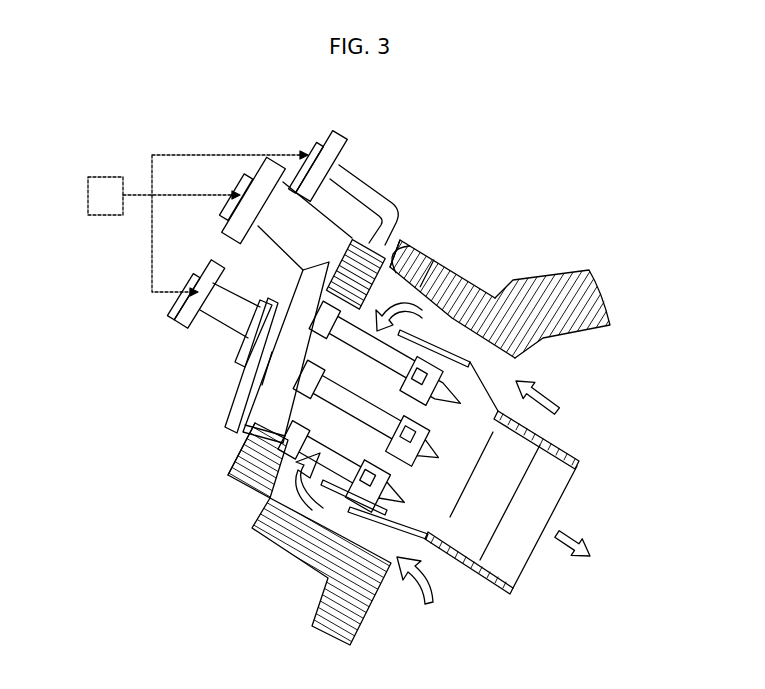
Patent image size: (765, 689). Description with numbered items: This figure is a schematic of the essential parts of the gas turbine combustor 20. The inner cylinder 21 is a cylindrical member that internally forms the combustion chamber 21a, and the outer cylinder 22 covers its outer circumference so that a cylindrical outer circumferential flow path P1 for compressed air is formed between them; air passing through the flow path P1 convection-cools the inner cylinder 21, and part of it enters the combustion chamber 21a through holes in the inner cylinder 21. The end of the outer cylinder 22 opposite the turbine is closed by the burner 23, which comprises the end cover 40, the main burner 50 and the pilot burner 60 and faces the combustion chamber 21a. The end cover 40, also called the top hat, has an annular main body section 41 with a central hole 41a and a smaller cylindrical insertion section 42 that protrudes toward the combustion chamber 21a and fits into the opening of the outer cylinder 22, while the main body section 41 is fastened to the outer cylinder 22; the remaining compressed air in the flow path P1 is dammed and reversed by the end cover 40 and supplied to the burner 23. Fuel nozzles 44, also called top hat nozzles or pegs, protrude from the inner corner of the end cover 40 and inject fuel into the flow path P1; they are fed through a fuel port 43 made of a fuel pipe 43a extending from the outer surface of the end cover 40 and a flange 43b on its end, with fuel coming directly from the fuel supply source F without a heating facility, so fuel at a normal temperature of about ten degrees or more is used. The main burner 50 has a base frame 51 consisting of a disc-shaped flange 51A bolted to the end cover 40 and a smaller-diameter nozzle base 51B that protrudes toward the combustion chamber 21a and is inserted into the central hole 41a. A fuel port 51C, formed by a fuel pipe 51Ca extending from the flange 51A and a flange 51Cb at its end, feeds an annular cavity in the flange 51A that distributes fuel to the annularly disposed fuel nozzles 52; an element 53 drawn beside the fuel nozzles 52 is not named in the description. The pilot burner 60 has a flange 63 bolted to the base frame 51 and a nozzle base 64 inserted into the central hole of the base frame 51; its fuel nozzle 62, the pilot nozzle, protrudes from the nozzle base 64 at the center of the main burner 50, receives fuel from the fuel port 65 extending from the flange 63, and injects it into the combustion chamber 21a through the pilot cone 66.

The valve device 20 is at (484, 160).
The inner cylinder 21 is at (507, 478).
The combustion chamber 21a is at (543, 521).
The outer cylinder 22 is at (482, 292).
The burner 23 is at (170, 356).
The end cover 40 is at (407, 403).
The main body section 41 is at (216, 477).
The central hole 41a is at (262, 418).
The insertion section 42 is at (456, 271).
The fuel port 43 is at (365, 188).
The fuel pipe 43a is at (352, 173).
The flange 43b is at (344, 140).
The fuel nozzle 44 is at (427, 253).
The main burner 50 is at (320, 325).
The base frame 51 is at (259, 268).
The flange 51A is at (236, 426).
The nozzle base 51B is at (254, 384).
The fuel port 51C is at (259, 182).
The fuel pipe 51Ca is at (297, 210).
The flange 51Cb is at (272, 162).
The fuel nozzle 52 is at (396, 524).
The seal 53 is at (357, 509).
The pilot burner 60 is at (206, 310).
The fuel nozzle 62 is at (413, 340).
The flange 63 is at (266, 306).
The nozzle base 64 is at (277, 300).
The fuel port 65 is at (213, 271).
The pilot cone 66 is at (460, 558).
The outer circumferential flow path P1 is at (491, 366).
The fuel supply source F is at (105, 175).